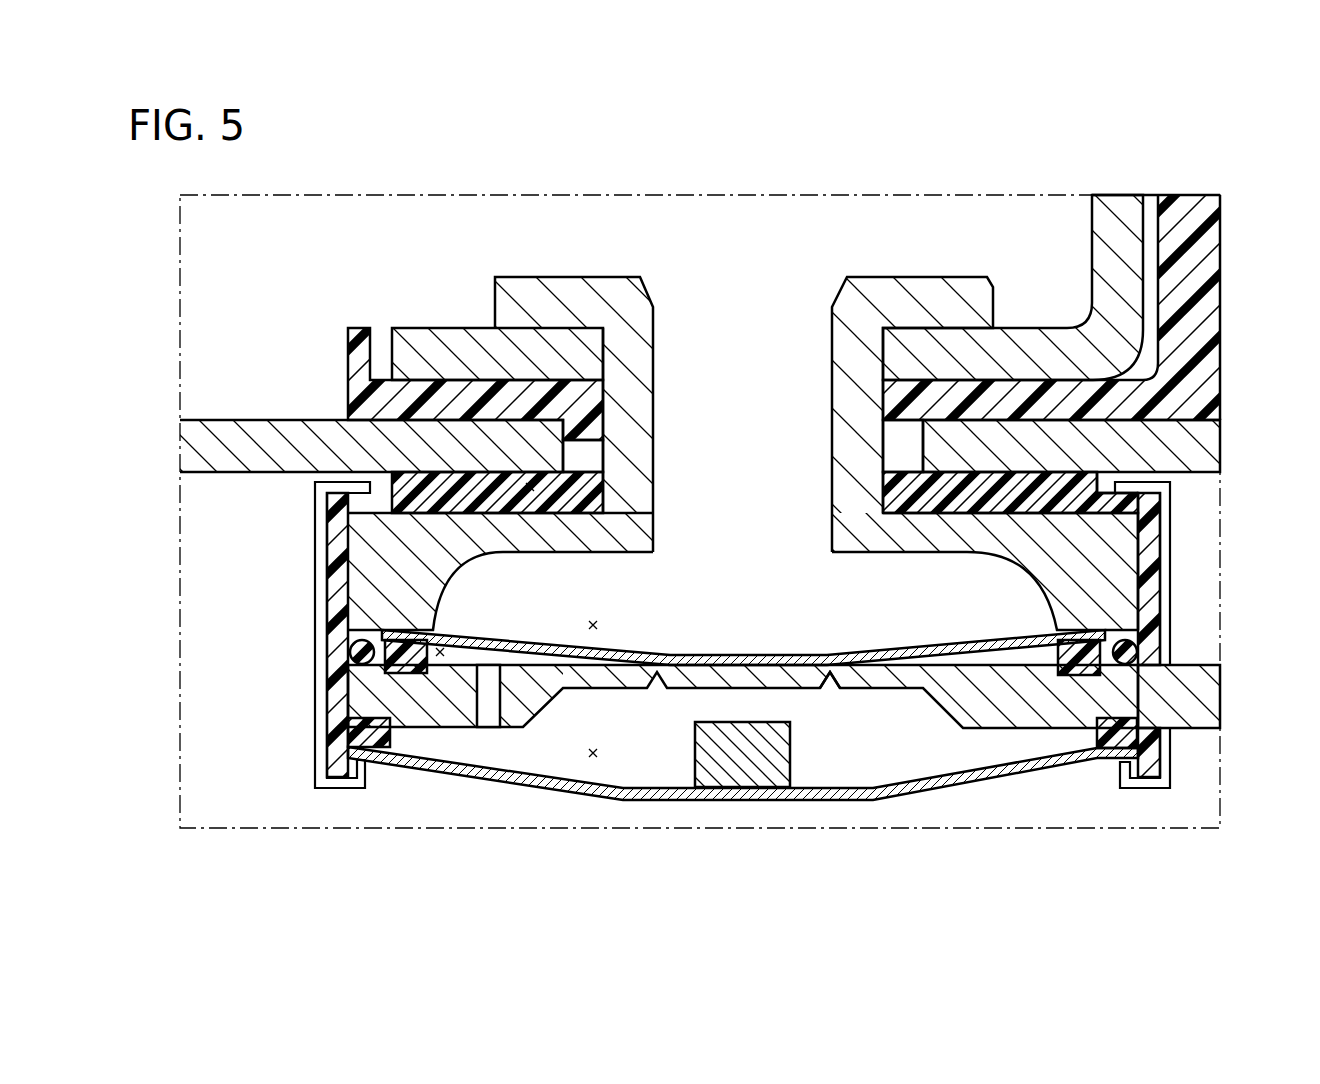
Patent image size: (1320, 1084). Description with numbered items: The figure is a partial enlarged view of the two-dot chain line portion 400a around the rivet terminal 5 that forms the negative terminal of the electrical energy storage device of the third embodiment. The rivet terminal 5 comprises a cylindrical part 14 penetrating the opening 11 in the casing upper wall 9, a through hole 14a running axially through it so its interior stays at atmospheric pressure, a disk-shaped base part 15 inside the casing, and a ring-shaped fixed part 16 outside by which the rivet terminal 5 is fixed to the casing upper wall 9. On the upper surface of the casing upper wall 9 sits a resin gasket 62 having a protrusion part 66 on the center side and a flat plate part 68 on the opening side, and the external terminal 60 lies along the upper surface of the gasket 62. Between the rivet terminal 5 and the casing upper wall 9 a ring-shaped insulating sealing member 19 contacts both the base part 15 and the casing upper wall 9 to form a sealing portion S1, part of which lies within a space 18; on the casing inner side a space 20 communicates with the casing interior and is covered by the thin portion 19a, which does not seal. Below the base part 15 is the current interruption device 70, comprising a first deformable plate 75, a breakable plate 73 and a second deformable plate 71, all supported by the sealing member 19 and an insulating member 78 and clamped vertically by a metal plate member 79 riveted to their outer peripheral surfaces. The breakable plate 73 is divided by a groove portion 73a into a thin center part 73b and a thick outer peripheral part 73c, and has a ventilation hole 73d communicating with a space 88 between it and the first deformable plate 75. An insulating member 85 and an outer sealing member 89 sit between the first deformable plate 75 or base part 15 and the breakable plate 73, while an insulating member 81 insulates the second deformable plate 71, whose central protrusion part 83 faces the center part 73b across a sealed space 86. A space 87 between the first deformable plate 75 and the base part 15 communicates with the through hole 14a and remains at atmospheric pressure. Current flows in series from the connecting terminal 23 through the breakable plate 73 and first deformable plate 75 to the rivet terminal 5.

The two-dot chain line portion 400a is at (303, 195).
The rivet terminal 5 is at (507, 150).
The casing upper wall 9 is at (273, 425).
The opening 11 is at (917, 457).
The cylindrical part 14 is at (628, 342).
The through hole 14a is at (795, 342).
The base part 15 is at (450, 532).
The fixed part 16 is at (575, 305).
The space 18 is at (530, 490).
The sealing member 19 is at (653, 553).
The thin portion 19a is at (1103, 512).
The space 20 is at (392, 515).
The connecting terminal 23 is at (1200, 710).
The external terminal 60 is at (1127, 317).
The gasket 62 is at (1017, 150).
The protrusion part 66 is at (1185, 220).
The flat plate part 68 is at (1017, 393).
The current interruption device 70 is at (1196, 636).
The second deformable plate 71 is at (630, 792).
The breakable plate 73 is at (878, 678).
The groove portion 73a is at (828, 688).
The center part 73b is at (798, 678).
The outer peripheral part 73c is at (1102, 725).
The ventilation hole 73d is at (490, 700).
The first deformable plate 75 is at (512, 700).
The insulating member 78 is at (248, 805).
The plate member 79 is at (323, 710).
The insulating member 81 is at (370, 722).
The protrusion part 83 is at (728, 765).
The insulating member 85 is at (383, 667).
The space 86 is at (593, 757).
The space 87 is at (593, 629).
The space 88 is at (440, 656).
The sealing member 89 is at (358, 640).
The sealing portion S1 is at (1025, 513).